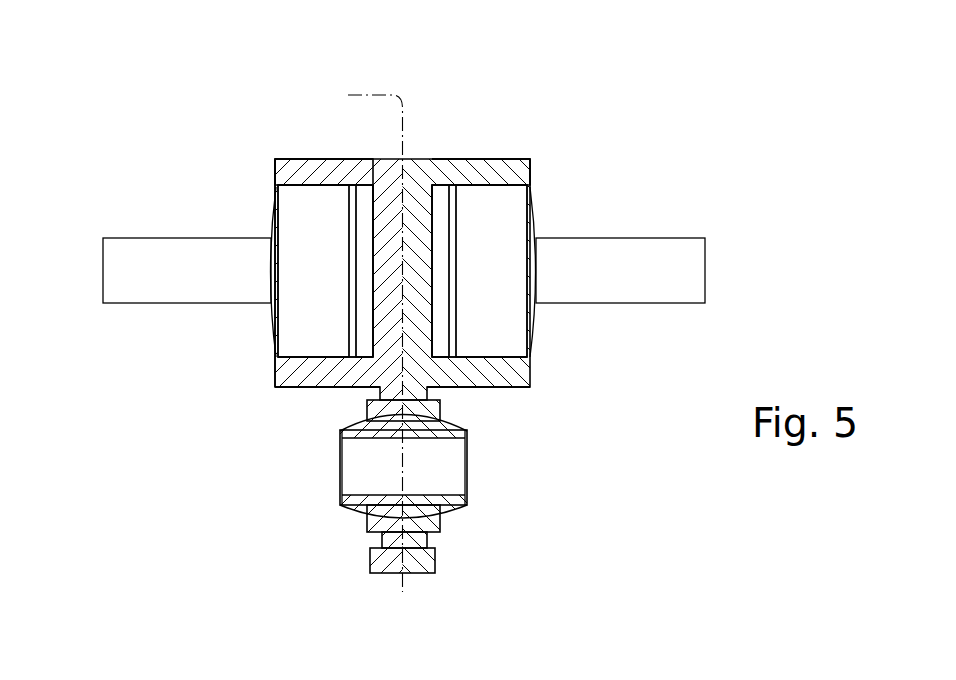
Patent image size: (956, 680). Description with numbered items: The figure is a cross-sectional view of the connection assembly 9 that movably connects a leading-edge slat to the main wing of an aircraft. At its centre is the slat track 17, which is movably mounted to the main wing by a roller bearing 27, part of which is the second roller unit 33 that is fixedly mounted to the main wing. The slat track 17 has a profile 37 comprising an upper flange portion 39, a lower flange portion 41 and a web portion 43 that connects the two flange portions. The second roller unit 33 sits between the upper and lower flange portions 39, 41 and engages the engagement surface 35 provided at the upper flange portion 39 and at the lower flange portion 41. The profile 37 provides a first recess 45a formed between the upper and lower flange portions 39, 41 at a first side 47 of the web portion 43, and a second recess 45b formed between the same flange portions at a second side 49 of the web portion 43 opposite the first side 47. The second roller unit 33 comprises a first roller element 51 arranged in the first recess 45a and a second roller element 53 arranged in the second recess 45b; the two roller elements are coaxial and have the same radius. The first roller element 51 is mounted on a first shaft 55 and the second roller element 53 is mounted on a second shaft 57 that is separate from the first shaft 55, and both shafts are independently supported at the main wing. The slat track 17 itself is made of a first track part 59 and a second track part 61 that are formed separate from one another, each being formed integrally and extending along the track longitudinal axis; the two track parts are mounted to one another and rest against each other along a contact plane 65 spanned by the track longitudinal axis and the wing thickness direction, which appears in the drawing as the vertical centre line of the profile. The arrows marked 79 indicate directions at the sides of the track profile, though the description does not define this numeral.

The connection assembly 9 is at (597, 110).
The slat track 17 is at (470, 163).
The roller bearing 27 is at (241, 139).
The second roller unit 33 is at (241, 139).
The engagement surface 35 is at (342, 177).
The profile 37 is at (602, 415).
The upper flange portion 39 is at (342, 177).
The lower flange portion 41 is at (325, 377).
The web portion 43 is at (372, 289).
The first recess 45a is at (363, 212).
The second recess 45b is at (443, 205).
The first side 47 is at (373, 330).
The second side 49 is at (433, 330).
The first roller element 51 is at (330, 263).
The second roller element 53 is at (517, 263).
The first shaft 55 is at (131, 287).
The second shaft 57 is at (687, 287).
The first track part 59 is at (290, 170).
The second track part 61 is at (528, 170).
The contact plane 65 is at (355, 335).
The force direction 79 is at (273, 358).